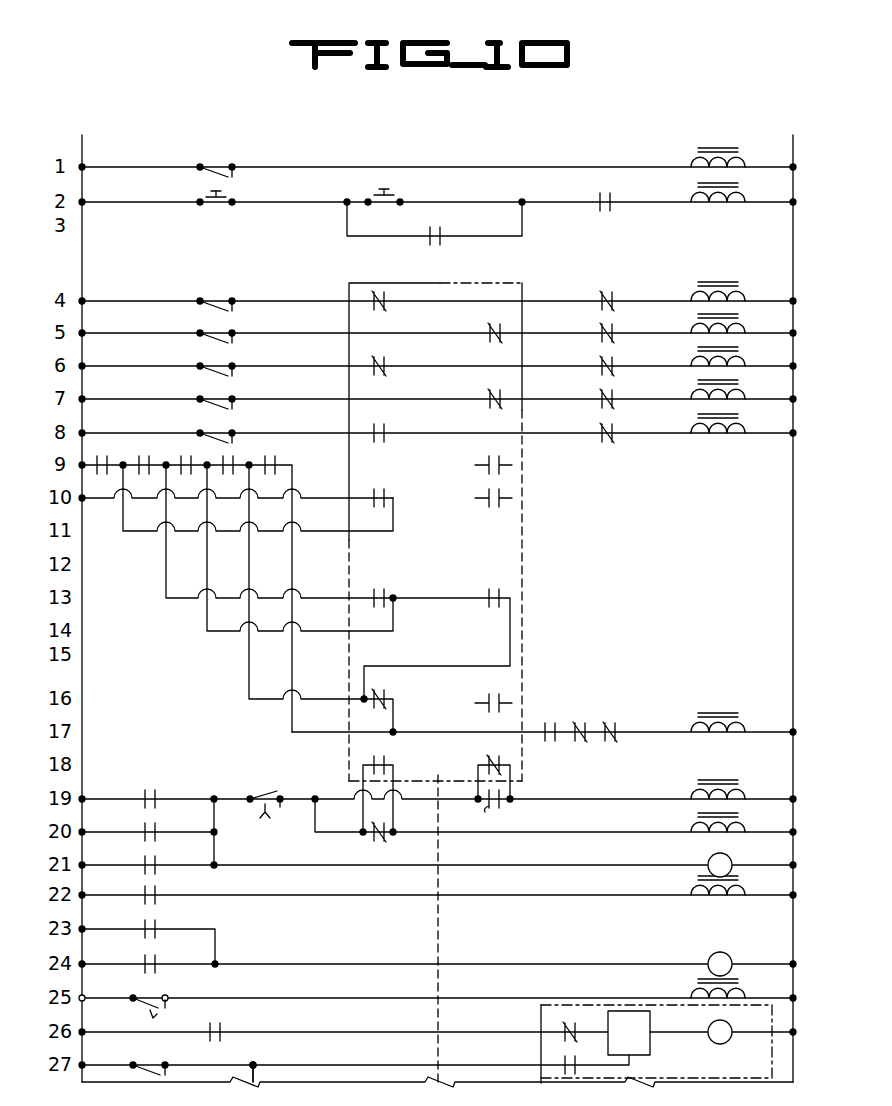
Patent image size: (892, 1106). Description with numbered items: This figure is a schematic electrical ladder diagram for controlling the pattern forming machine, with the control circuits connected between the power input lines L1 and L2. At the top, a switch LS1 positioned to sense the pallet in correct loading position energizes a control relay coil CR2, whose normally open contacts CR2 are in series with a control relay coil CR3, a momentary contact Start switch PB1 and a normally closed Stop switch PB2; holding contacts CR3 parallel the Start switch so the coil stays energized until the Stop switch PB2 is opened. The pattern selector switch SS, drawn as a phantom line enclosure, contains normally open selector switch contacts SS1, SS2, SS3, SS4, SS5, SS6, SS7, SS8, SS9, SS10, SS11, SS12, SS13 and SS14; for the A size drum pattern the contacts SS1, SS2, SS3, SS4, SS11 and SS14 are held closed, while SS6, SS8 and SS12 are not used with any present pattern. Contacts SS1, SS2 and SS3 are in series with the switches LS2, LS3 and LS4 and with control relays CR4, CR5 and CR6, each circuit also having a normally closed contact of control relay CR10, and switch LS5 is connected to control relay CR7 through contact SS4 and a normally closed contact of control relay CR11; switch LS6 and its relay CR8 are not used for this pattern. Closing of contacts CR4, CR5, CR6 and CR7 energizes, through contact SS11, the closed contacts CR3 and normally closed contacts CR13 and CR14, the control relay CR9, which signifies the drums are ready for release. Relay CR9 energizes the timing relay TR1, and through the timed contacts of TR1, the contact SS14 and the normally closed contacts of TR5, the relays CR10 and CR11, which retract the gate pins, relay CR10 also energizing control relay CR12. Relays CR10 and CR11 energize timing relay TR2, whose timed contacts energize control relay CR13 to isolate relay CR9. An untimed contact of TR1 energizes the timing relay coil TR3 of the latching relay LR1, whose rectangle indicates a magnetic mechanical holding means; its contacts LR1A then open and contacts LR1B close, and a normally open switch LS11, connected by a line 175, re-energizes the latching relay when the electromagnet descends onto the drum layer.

The power input line L1 is at (80, 591).
The power input line L2 is at (784, 596).
The switch LS1 is at (195, 173).
The switch LS2 is at (226, 306).
The switch LS3 is at (226, 338).
The switch LS4 is at (226, 371).
The switch LS5 is at (226, 404).
The switch LS6 is at (232, 437).
The switch LS11 is at (139, 1062).
The Start switch PB1 is at (394, 195).
The Stop switch PB2 is at (203, 206).
The control relay CR2 is at (598, 201).
The control relay CR3 is at (452, 223).
The control relay CR4 is at (114, 460).
The control relay CR5 is at (156, 460).
The control relay CR6 is at (196, 452).
The control relay CR7 is at (226, 456).
The control relay CR8 is at (270, 456).
The control relay CR9 is at (128, 785).
The control relay CR10 is at (598, 306).
The control relay CR11 is at (598, 404).
The control relay CR12 is at (718, 897).
The control relay CR13 is at (590, 721).
The control relay coil CR14 is at (594, 734).
The selector switch SS is at (522, 538).
The selector switch contact SS1 is at (390, 304).
The selector switch contact SS2 is at (491, 330).
The selector switch contact SS3 is at (390, 369).
The selector switch contact SS4 is at (491, 396).
The selector switch contact SS5 is at (386, 436).
The selector switch contact SS6 is at (491, 458).
The selector switch contact SS7 is at (392, 484).
The selector switch contact SS8 is at (491, 504).
The selector switch contact SS9 is at (396, 574).
The selector switch contact SS10 is at (486, 606).
The selector switch contact SS11 is at (410, 684).
The selector switch contact SS12 is at (476, 708).
The selector switch contact SS13 is at (394, 758).
The selector switch contact SS14 is at (492, 764).
The timing relay TR1 is at (226, 1034).
The timing relay TR2 is at (429, 978).
The timing relay coil TR3 is at (600, 917).
The timing relay coil TR5 is at (386, 838).
The latching relay LR1 is at (591, 1005).
The latching relay contacts LR1A is at (563, 1031).
The latching relay contacts LR1B is at (562, 1064).
The line 175 is at (256, 1062).